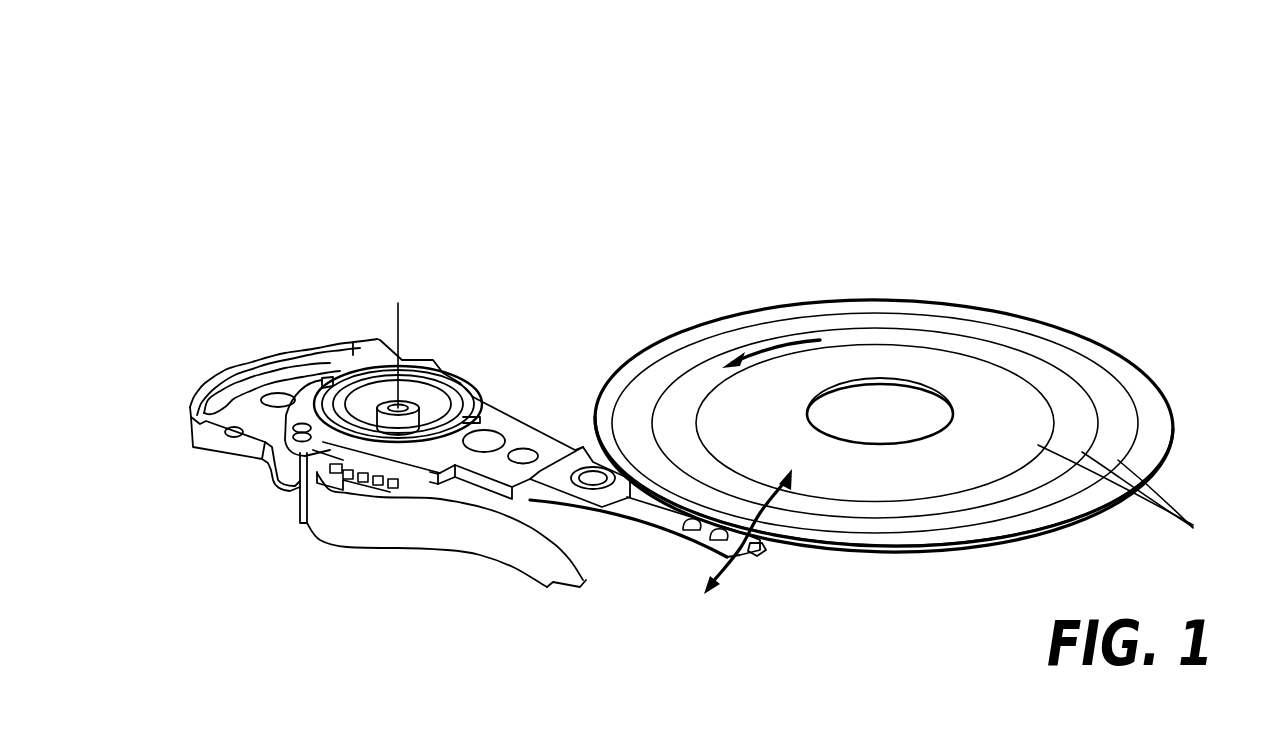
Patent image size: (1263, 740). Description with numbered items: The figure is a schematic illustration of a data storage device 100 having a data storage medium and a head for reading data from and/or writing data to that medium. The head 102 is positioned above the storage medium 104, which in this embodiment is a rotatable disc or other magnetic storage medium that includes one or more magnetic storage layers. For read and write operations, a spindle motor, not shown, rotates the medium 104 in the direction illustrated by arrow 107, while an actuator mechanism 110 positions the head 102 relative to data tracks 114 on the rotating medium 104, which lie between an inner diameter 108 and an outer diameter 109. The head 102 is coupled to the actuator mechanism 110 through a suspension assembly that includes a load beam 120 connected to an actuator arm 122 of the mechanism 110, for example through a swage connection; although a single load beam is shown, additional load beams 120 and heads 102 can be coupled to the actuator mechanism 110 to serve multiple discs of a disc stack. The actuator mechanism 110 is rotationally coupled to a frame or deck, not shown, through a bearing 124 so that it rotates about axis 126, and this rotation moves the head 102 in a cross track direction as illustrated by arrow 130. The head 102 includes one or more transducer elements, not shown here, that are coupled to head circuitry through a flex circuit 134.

The data storage device 100 is at (1072, 132).
The head 102 is at (800, 567).
The storage medium 104 is at (912, 387).
The arrow 107 is at (778, 343).
The inner diameter 108 is at (920, 380).
The outer diameter 109 is at (887, 303).
The actuator mechanism 110 is at (521, 429).
The data tracks 114 is at (1135, 495).
The load beam 120 is at (691, 431).
The actuator arm 122 is at (540, 425).
The bearing 124 is at (389, 402).
The axis 126 is at (398, 330).
The arrow 130 is at (783, 517).
The flex circuit 134 is at (456, 538).